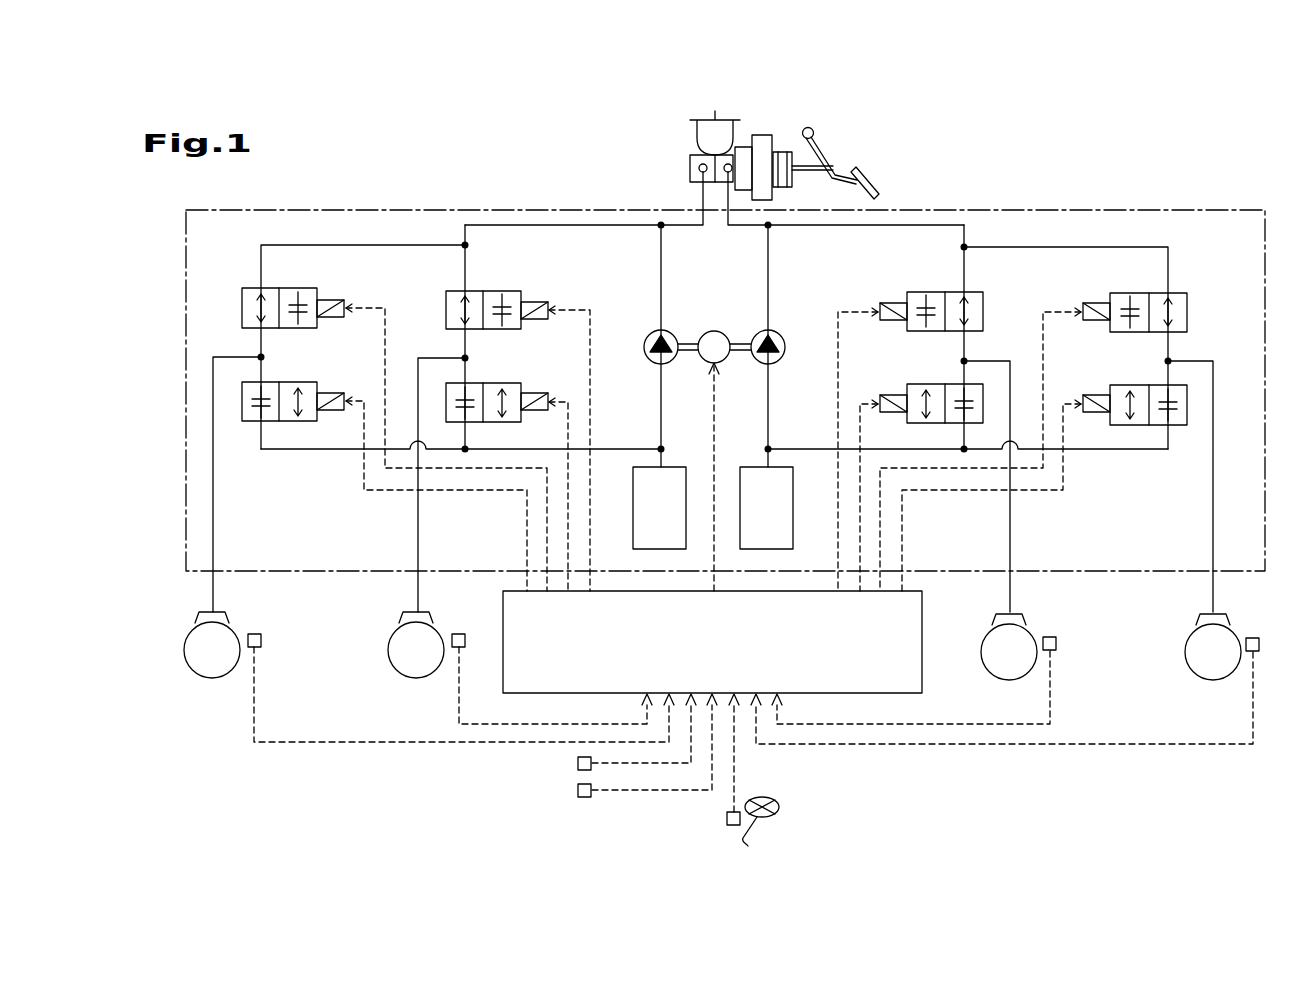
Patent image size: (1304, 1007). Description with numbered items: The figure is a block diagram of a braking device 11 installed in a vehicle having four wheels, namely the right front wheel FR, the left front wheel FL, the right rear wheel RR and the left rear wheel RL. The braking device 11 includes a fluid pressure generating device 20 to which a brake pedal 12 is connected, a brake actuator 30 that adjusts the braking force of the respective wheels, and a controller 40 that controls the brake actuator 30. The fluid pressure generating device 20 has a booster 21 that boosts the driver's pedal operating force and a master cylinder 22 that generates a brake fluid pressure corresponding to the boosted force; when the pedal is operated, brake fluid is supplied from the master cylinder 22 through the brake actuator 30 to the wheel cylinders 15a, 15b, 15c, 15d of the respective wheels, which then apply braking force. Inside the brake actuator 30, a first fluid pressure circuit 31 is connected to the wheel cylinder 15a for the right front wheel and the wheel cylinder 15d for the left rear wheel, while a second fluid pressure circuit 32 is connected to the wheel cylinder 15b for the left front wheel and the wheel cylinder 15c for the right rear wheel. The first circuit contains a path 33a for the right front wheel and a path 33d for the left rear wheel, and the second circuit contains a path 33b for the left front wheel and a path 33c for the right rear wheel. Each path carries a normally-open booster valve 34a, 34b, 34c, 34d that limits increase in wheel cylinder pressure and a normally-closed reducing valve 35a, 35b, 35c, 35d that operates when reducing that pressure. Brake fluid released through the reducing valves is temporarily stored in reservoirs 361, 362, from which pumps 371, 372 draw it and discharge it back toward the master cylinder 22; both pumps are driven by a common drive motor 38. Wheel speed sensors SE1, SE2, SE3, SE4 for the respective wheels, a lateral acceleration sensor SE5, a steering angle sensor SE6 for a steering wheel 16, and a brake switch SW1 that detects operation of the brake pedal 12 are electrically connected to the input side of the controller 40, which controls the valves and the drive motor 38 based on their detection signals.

The braking device 11 is at (1085, 140).
The brake pedal 12 is at (876, 183).
The wheel cylinder 15a is at (402, 612).
The wheel cylinder 15b is at (1023, 614).
The wheel cylinder 15c is at (1198, 614).
The wheel cylinder 15d is at (228, 612).
The steering wheel 16 is at (780, 805).
The fluid pressure generating device 20 is at (857, 124).
The booster 21 is at (763, 135).
The master cylinder 22 is at (690, 158).
The brake actuator 30 is at (1145, 212).
The first fluid pressure circuit 31 is at (667, 230).
The second fluid pressure circuit 32 is at (768, 230).
The path 33a is at (468, 253).
The path 33b is at (966, 265).
The path 33c is at (1065, 247).
The path 33d is at (365, 245).
The booster valve 34a is at (510, 291).
The booster valve 34b is at (935, 292).
The booster valve 34c is at (1140, 293).
The booster valve 34d is at (290, 288).
The reducing valve 35a is at (513, 383).
The reducing valve 35b is at (935, 384).
The reducing valve 35c is at (1140, 385).
The reducing valve 35d is at (308, 382).
The reservoir 361 is at (680, 467).
The reservoir 362 is at (745, 467).
The pump 371 is at (675, 333).
The pump 372 is at (755, 333).
The drive motor 38 is at (703, 362).
The controller 40 is at (922, 679).
The wheel speed sensor SE1 is at (459, 634).
The wheel speed sensor SE2 is at (1058, 644).
The wheel speed sensor SE3 is at (1253, 638).
The wheel speed sensor SE4 is at (262, 640).
The lateral acceleration sensor SE5 is at (577, 764).
The steering angle sensor SE6 is at (725, 820).
The brake switch SW1 is at (577, 791).